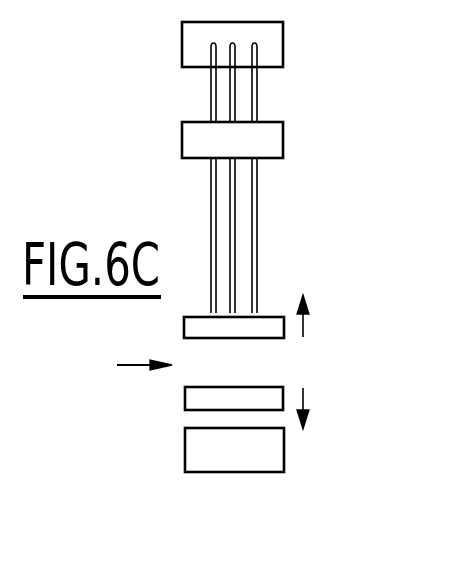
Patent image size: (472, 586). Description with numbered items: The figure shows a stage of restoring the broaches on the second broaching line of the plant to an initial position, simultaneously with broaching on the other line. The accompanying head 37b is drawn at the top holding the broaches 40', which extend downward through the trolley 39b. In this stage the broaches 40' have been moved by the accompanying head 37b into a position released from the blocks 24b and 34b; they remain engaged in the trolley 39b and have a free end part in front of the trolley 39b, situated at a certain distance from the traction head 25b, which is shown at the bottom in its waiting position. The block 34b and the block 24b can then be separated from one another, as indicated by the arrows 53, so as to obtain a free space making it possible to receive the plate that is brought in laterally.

The accompanying head 37b is at (197, 41).
The trolley 39b is at (197, 139).
The broaches 40' is at (275, 178).
The block 34b is at (197, 327).
The arrows 53 is at (331, 362).
The block 24b is at (196, 395).
The traction head 25b is at (262, 461).